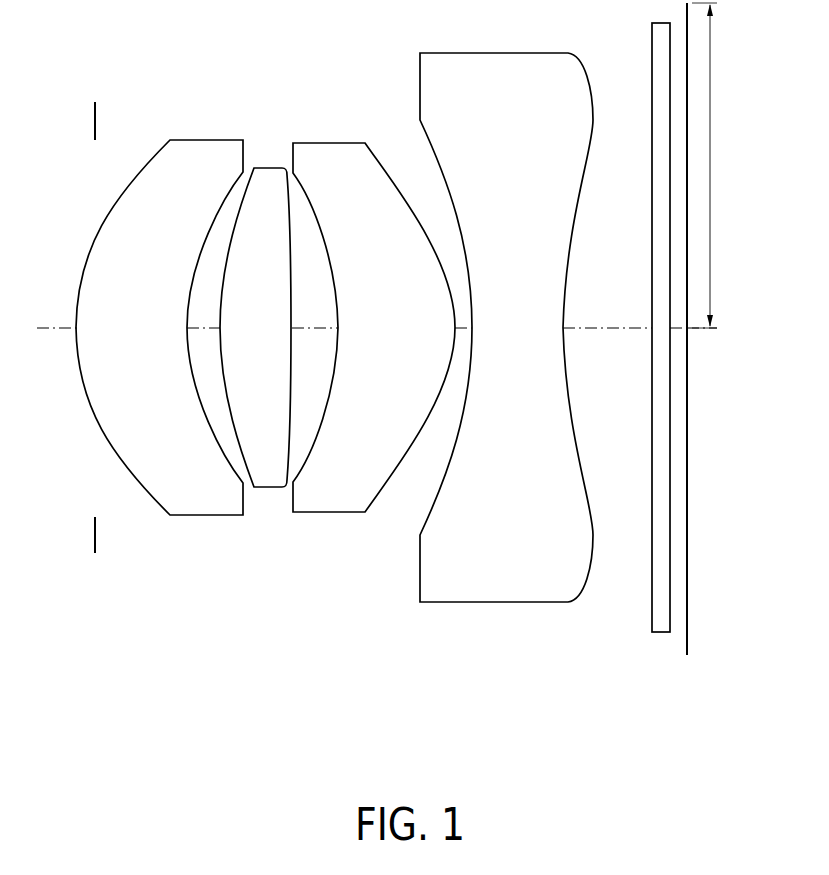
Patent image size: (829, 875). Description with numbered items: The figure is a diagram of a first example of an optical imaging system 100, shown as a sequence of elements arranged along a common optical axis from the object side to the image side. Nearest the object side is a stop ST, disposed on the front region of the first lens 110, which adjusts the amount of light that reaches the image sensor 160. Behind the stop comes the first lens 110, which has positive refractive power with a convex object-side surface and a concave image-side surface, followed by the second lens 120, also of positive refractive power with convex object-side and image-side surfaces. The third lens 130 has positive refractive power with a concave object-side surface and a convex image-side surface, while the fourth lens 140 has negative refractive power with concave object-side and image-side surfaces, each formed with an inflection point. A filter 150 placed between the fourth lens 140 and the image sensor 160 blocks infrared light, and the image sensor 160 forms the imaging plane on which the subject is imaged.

The optical imaging system 100 is at (76, 70).
The stop ST is at (94, 542).
The first lens 110 is at (200, 518).
The second lens 120 is at (272, 492).
The third lens 130 is at (333, 515).
The fourth lens 140 is at (485, 604).
The filter 150 is at (652, 598).
The image sensor 160 is at (687, 643).